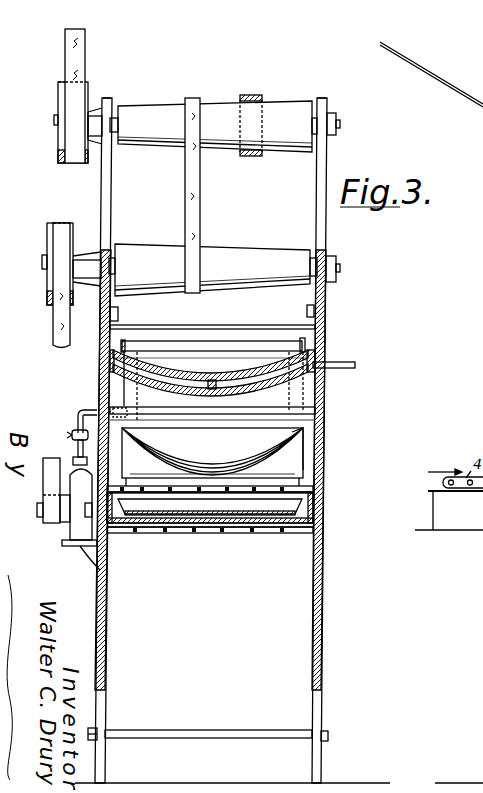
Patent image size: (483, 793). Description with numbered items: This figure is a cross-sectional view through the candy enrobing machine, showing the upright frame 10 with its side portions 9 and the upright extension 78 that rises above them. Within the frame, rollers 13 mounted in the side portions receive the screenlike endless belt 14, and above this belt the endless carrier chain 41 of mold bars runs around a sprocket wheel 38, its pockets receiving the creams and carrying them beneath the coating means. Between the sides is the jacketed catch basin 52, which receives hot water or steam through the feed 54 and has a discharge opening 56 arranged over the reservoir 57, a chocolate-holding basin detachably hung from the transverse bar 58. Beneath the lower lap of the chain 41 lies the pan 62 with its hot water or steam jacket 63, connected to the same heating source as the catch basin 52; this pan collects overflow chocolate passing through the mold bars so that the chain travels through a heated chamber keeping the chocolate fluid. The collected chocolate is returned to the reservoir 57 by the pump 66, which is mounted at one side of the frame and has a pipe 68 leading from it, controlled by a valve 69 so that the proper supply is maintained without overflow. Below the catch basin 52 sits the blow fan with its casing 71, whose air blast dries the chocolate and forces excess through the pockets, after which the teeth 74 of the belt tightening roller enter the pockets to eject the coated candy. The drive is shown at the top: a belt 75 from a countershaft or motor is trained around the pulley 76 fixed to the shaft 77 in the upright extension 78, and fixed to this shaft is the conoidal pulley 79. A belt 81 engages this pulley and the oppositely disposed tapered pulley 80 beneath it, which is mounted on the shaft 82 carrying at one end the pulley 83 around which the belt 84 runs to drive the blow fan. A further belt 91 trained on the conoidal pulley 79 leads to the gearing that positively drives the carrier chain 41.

The side portions 9 is at (105, 628).
The frame 10 is at (326, 436).
The rollers 13 is at (253, 533).
The endless belt 14 is at (200, 490).
The sprocket wheel 38 is at (125, 392).
The endless carrier chain 41 is at (206, 337).
The catch basin 52 is at (302, 383).
The feed 54 is at (343, 363).
The discharge opening 56 is at (212, 381).
The reservoir 57 is at (180, 450).
The transverse bar 58 is at (303, 443).
The pan 62 is at (237, 511).
The jacket 63 is at (272, 518).
The pump 66 is at (50, 458).
The pipe 68 is at (80, 409).
The valve 69 is at (68, 433).
The casing 71 is at (80, 515).
The teeth 74 is at (449, 499).
The belt 75 is at (82, 56).
The pulley 76 is at (58, 104).
The shaft 77 is at (340, 123).
The upright extension 78 is at (107, 213).
The conoidal pulley 79 is at (205, 107).
The pulley 80 is at (213, 270).
The belt 81 is at (196, 196).
The shaft 82 is at (342, 269).
The pulley 83 is at (47, 290).
The belt 84 is at (60, 327).
The belt 91 is at (255, 97).